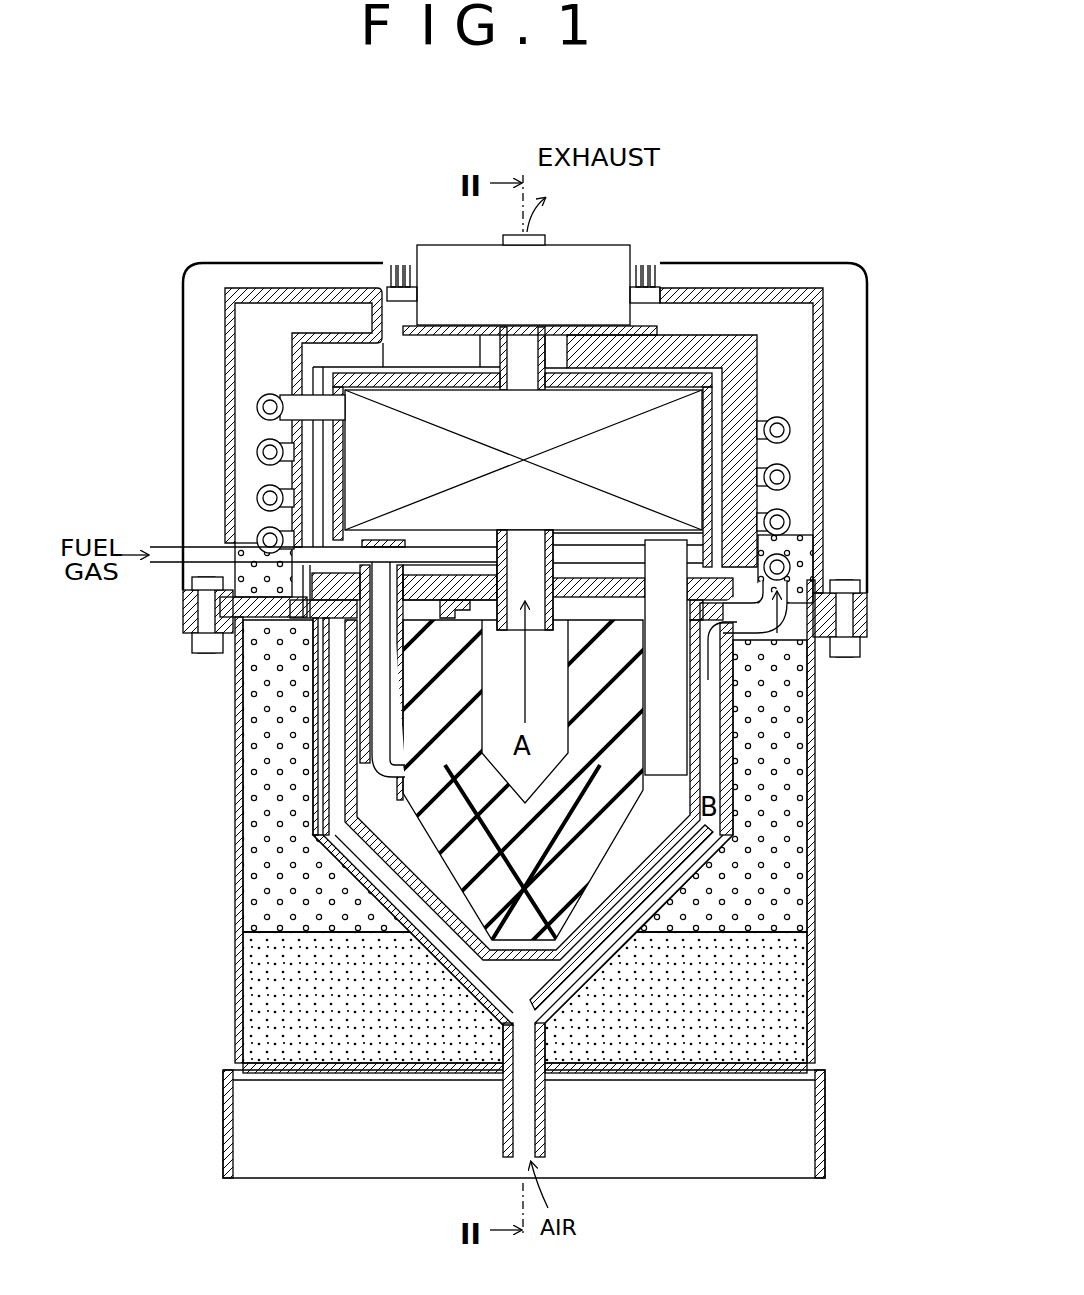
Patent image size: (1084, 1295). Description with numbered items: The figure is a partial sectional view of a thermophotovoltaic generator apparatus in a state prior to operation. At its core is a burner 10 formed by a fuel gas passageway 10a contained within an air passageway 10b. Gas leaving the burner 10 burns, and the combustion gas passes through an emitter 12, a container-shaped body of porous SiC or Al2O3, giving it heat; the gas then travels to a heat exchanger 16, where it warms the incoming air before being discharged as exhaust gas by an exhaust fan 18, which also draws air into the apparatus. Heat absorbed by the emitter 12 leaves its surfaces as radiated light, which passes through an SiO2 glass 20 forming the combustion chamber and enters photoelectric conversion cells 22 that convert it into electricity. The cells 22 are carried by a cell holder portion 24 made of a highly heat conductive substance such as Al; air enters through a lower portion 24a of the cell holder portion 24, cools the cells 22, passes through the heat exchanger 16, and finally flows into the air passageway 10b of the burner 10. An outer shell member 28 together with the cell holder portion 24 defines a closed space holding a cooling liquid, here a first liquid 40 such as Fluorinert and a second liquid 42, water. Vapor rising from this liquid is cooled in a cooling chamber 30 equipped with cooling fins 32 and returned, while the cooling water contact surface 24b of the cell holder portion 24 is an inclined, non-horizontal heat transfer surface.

The burner 10 is at (249, 670).
The fuel gas passageway 10a is at (383, 730).
The air passageway 10b is at (363, 702).
The emitter 12 is at (425, 775).
The heat exchanger 16 is at (687, 417).
The exhaust fan 18 is at (597, 268).
The SiO2 glass 20 is at (705, 735).
The photoelectric conversion cells 22 is at (735, 700).
The cell holder portion 24 is at (595, 1036).
The lower portion of the cell holder portion 24a is at (547, 1127).
The cooling water contact surface 24b is at (612, 970).
The outer shell member 28 is at (812, 935).
The cooling chamber 30 is at (790, 323).
The cooling fins 32 is at (845, 445).
The first liquid 40 is at (770, 995).
The second liquid 42 is at (790, 815).